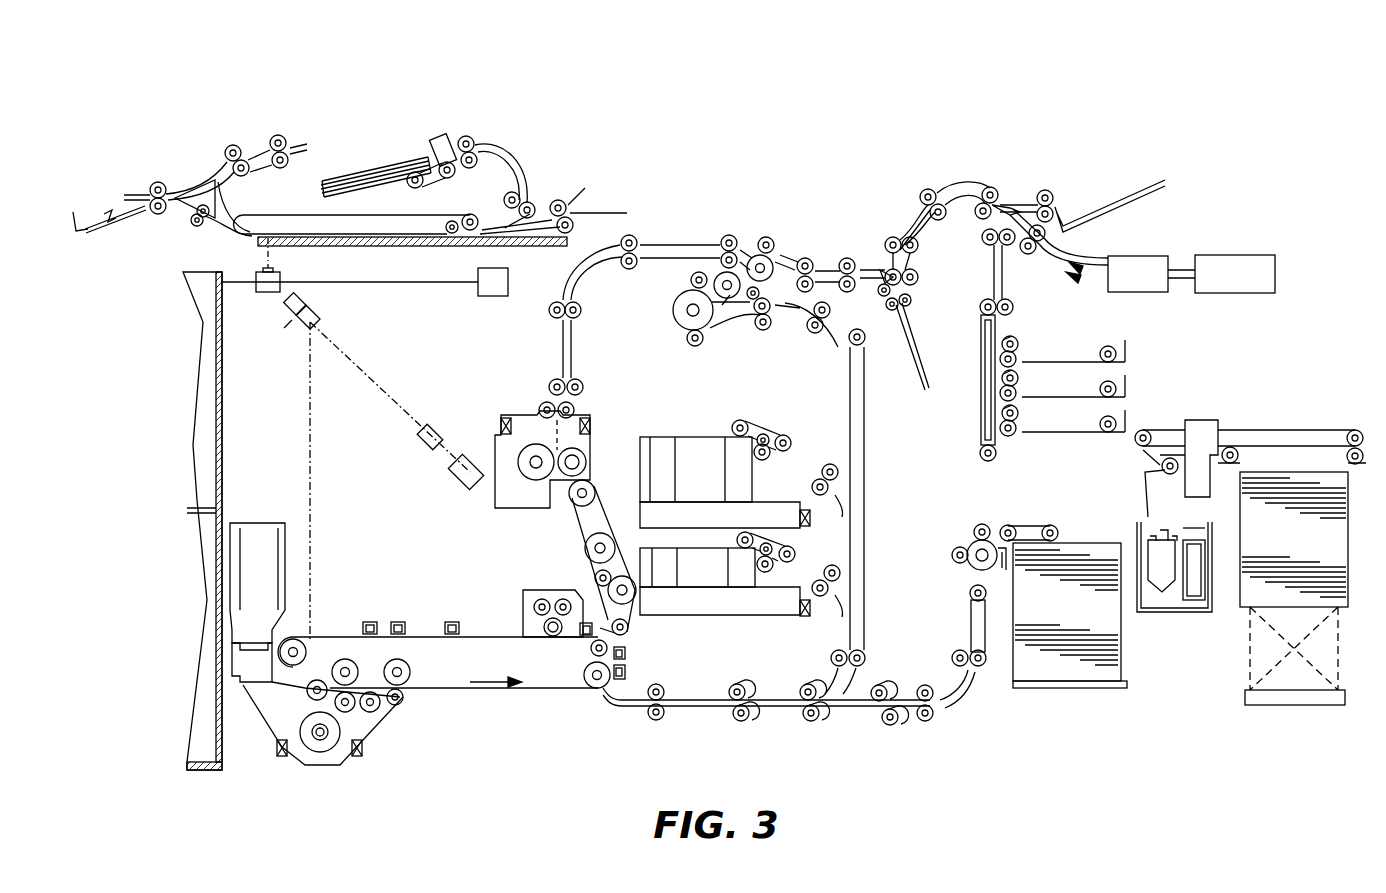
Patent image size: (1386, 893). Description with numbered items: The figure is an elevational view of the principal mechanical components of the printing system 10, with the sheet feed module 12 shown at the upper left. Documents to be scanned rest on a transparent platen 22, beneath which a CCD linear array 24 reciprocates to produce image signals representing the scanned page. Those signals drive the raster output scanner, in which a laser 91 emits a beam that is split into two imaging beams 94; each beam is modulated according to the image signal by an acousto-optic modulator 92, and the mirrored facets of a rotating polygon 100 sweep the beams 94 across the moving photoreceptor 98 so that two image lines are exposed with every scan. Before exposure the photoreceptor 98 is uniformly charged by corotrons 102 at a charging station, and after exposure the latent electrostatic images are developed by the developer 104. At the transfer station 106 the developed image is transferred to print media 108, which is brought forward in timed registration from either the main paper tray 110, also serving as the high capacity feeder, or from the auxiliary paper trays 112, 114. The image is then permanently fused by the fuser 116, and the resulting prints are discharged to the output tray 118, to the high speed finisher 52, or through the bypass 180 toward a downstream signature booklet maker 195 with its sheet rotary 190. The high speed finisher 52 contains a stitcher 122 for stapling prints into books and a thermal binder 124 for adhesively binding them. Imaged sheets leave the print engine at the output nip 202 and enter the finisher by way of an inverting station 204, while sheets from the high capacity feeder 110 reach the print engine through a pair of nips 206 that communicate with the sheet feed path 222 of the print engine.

The printing system 10 is at (862, 132).
The sheet feed module 12 is at (358, 122).
The transparent platen 22 is at (333, 240).
The linear array 24 is at (266, 270).
The high speed finisher 52 is at (1155, 370).
The laser 91 is at (462, 482).
The acousto-optic modulator 92 is at (426, 448).
The imaging beams 94 is at (373, 373).
The photoreceptor 98 is at (527, 693).
The rotating polygon 100 is at (302, 320).
The corotrons 102 is at (452, 622).
The developer 104 is at (363, 728).
The transfer station 106 is at (609, 712).
The print media 108 is at (1120, 668).
The main paper tray 110 is at (1071, 688).
The auxiliary paper tray 112 is at (698, 615).
The auxiliary paper tray 114 is at (710, 435).
The fuser 116 is at (608, 428).
The output tray 118 is at (1100, 216).
The stitcher 122 is at (1210, 422).
The thermal binder 124 is at (1128, 512).
The bypass 180 is at (1060, 256).
The sheet rotary 190 is at (1142, 258).
The signature booklet maker 195 is at (1243, 256).
The output nip 202 is at (859, 262).
The inverting station 204 is at (886, 254).
The pair of nips 206 is at (990, 683).
The sheet feed path 222 is at (786, 715).